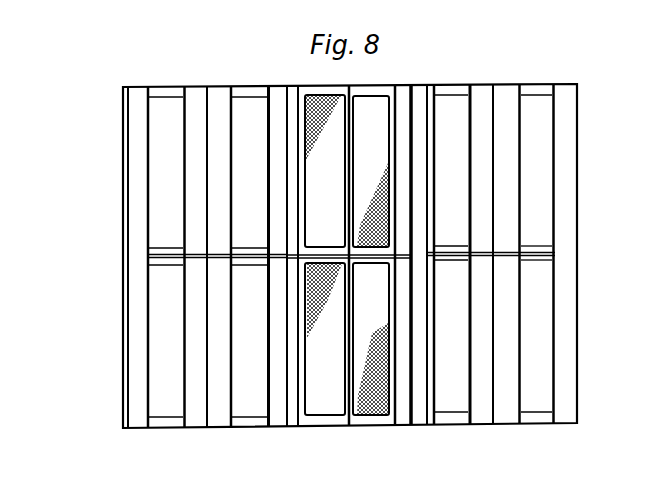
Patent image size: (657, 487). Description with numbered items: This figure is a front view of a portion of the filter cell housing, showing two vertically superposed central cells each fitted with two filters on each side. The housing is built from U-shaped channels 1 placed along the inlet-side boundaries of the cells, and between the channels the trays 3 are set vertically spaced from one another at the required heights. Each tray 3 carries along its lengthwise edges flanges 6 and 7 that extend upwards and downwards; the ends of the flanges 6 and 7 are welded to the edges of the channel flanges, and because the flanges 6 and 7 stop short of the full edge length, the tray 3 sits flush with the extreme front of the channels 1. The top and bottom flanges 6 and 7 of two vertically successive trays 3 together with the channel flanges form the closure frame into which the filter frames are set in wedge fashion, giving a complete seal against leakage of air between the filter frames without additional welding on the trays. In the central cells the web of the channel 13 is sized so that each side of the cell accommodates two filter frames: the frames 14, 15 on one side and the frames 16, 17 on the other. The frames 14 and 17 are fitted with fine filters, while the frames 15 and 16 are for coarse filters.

The U-shaped channel 1 is at (135, 358).
The tray 3 is at (200, 268).
The flange 6 is at (245, 255).
The flange 7 is at (163, 256).
The channel 13 is at (208, 257).
The filter frame 14 is at (293, 139).
The filter frame 15 is at (325, 255).
The filter frame 16 is at (371, 255).
The filter frame 17 is at (403, 141).